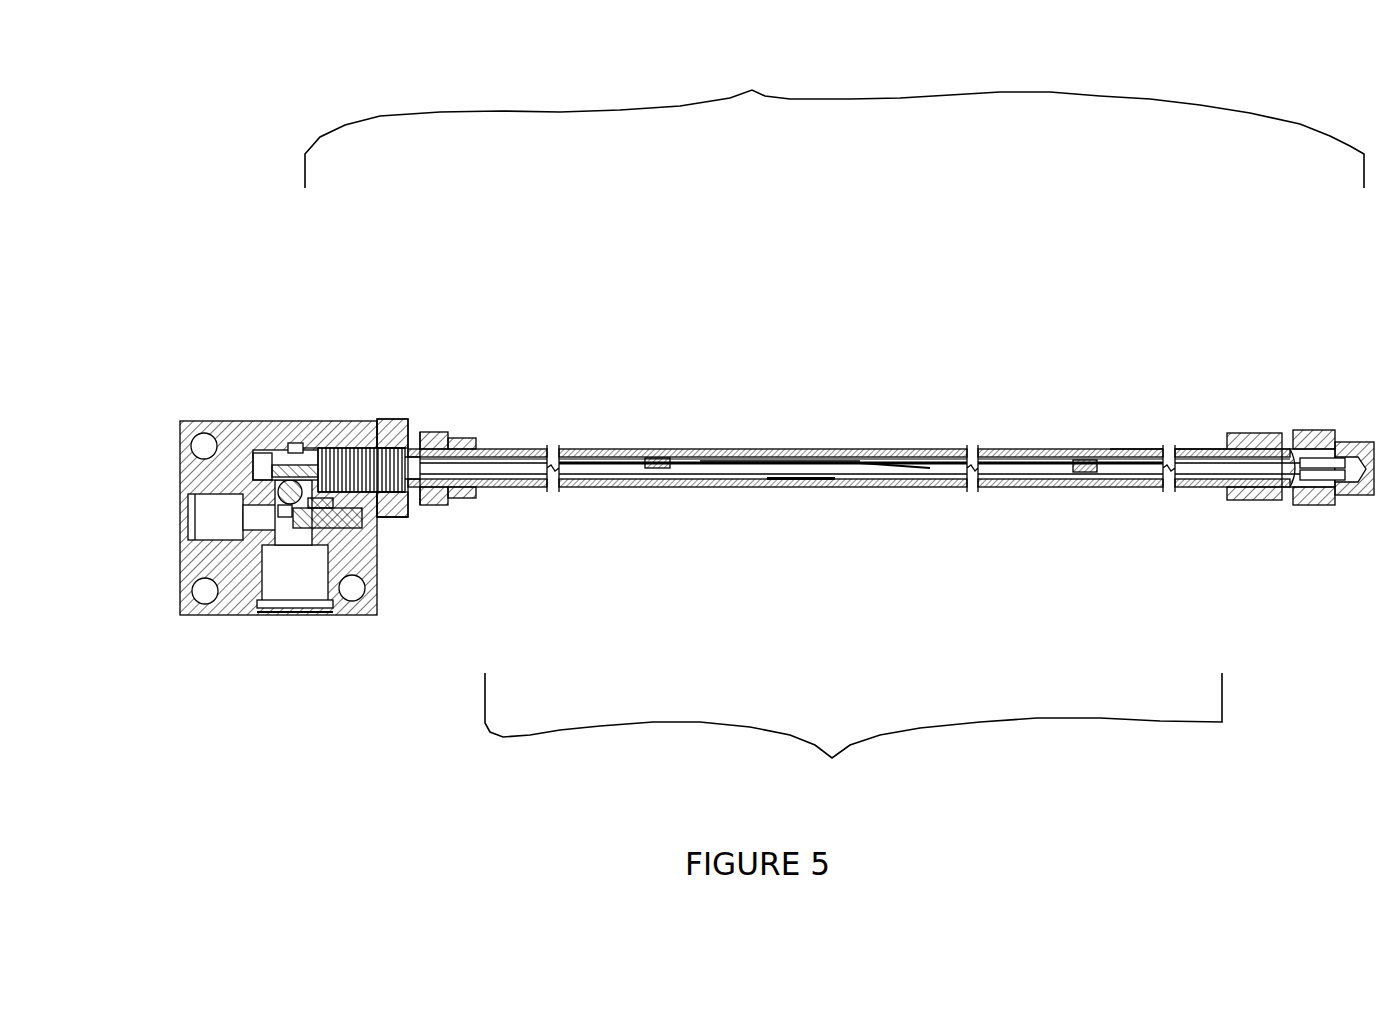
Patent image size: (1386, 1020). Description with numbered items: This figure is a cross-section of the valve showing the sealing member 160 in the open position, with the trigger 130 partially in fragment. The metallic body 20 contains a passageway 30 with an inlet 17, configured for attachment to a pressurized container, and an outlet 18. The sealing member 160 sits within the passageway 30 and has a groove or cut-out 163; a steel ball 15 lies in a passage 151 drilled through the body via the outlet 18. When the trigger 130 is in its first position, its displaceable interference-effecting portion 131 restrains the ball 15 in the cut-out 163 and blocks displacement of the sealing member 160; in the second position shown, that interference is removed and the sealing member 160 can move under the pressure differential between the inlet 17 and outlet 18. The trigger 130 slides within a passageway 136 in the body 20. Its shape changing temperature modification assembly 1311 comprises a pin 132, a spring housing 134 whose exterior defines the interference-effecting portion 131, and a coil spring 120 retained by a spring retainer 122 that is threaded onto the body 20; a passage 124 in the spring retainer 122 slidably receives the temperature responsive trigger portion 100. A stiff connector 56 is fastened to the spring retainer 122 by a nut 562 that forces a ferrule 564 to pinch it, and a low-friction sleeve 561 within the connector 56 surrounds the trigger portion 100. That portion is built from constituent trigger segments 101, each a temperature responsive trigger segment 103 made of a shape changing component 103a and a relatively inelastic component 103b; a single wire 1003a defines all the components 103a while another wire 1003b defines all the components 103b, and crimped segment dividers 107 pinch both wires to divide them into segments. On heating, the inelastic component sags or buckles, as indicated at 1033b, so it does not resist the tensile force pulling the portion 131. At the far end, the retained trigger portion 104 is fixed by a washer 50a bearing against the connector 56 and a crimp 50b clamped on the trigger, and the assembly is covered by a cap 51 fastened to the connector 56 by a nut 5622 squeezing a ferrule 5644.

The trigger 130 is at (834, 123).
The temperature responsive trigger portion 100 is at (853, 740).
The ball 15 is at (250, 482).
The inlet 17 is at (190, 510).
The passage 151 is at (287, 508).
The outlet 18 is at (285, 607).
The sealing member 160 is at (338, 525).
The passageway 30 is at (287, 523).
The groove or cut-out 163 is at (337, 510).
The displaceable interference-effecting portion 131 is at (232, 455).
The pin 132 is at (268, 458).
The body 20 is at (270, 455).
The passageway 136 is at (302, 445).
The spring housing 134 is at (320, 447).
The biasing member 120 is at (395, 425).
The spring retainer 122 is at (397, 517).
The passage 124 is at (407, 473).
The nut 562 is at (470, 437).
The shape changing temperature modification assembly 1311 is at (407, 447).
The ferrule 564 is at (467, 492).
The constituent trigger segments 101 is at (513, 454).
The temperature responsive trigger segments 103 is at (528, 490).
The single member 1003b is at (772, 458).
The single member 1003a is at (780, 471).
The shape changing material-comprising component 103a is at (817, 470).
The sagging or buckling 1033b is at (838, 450).
The relatively inelastic material-comprising component 103b is at (878, 465).
The segment dividers 107 is at (663, 457).
The connector 56 is at (1123, 450).
The sleeve 561 is at (1152, 450).
The nut 5622 is at (1235, 435).
The ferrule 5644 is at (1251, 445).
The retained trigger portion 104 is at (1336, 440).
The cap 51 is at (1368, 445).
The washer 50a is at (1305, 490).
The crimp 50b is at (1345, 482).